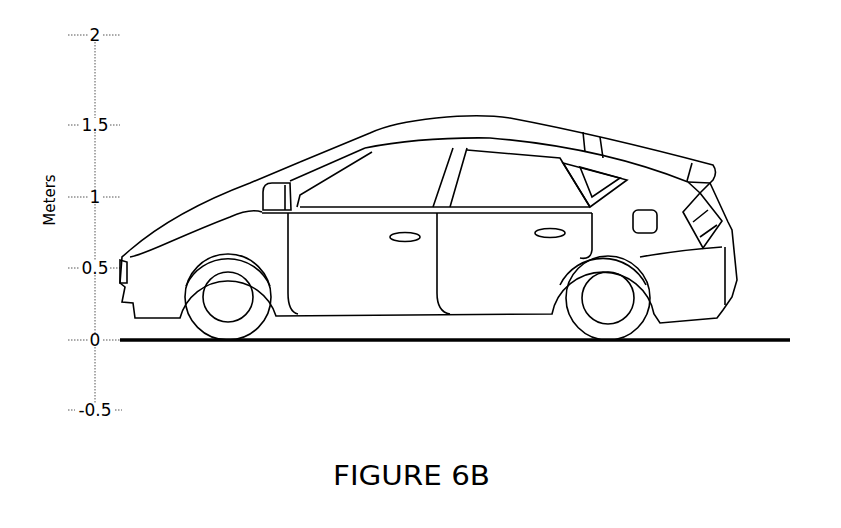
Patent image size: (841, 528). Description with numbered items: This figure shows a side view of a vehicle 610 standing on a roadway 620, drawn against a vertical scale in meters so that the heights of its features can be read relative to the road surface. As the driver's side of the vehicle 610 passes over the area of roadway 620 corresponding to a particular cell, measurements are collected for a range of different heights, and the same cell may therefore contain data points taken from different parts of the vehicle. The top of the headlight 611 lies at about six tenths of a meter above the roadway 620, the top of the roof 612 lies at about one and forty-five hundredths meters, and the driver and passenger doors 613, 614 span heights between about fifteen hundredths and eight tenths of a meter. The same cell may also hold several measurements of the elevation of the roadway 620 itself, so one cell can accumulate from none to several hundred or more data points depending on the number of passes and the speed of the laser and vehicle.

The vehicle 610 is at (543, 122).
The headlight 611 is at (155, 218).
The roof 612 is at (457, 127).
The driver door 613 is at (337, 265).
The passenger door 614 is at (507, 265).
The roadway 620 is at (380, 343).